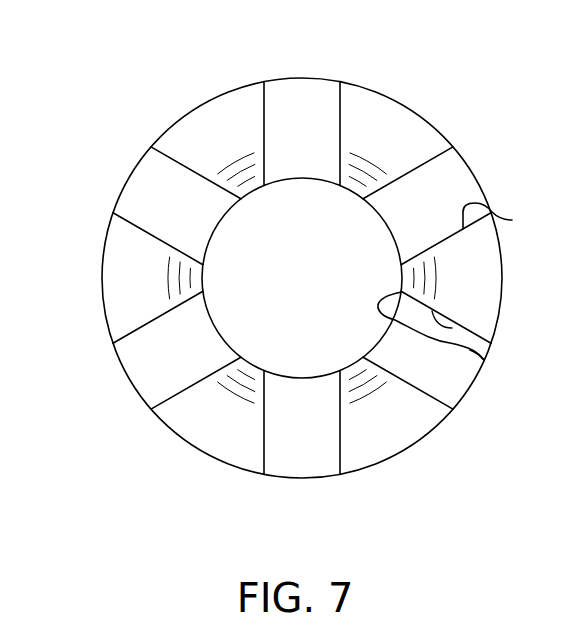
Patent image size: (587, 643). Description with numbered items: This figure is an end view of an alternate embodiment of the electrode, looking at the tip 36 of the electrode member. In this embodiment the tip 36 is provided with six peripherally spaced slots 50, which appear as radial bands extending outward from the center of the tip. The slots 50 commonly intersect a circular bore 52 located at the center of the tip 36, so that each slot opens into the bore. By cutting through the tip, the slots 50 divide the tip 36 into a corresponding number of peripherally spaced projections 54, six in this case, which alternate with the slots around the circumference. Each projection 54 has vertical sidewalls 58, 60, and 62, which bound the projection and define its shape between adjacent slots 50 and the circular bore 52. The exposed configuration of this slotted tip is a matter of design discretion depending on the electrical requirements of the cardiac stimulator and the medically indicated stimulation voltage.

The tip 36 is at (481, 193).
The slots 50 is at (290, 90).
The circular bore 52 is at (200, 278).
The projections 54 is at (217, 118).
The vertical sidewall 58 is at (512, 220).
The vertical sidewall 60 is at (484, 360).
The vertical sidewall 62 is at (455, 320).